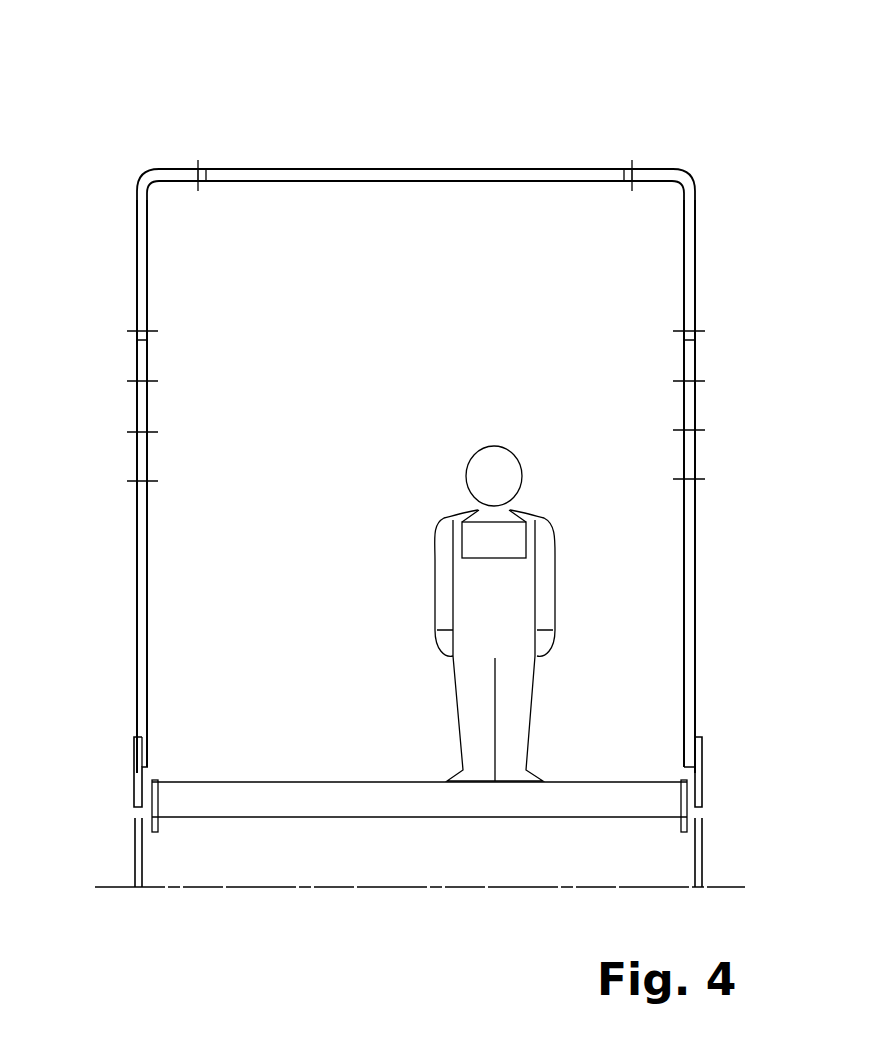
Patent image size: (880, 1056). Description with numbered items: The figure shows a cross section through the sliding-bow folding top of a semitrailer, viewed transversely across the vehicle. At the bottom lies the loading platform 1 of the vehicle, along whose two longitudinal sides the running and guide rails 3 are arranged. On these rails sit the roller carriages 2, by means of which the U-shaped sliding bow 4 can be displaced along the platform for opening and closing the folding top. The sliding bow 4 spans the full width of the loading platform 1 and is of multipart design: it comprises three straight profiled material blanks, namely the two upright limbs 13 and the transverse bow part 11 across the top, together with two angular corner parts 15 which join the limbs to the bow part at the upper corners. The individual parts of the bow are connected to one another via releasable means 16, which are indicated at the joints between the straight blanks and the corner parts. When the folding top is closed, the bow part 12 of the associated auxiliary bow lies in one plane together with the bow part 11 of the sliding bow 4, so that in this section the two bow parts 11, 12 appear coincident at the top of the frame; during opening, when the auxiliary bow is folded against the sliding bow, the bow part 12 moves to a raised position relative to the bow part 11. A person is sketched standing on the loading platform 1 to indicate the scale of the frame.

The loading platform 1 is at (398, 782).
The roller carriage 2 is at (140, 786).
The running and guide rail 3 is at (135, 868).
The sliding bow 4 is at (100, 462).
The bow part of sliding bow 11 is at (455, 170).
The bow part of auxiliary bow 12 is at (455, 170).
The limb 13 is at (140, 612).
The angular corner part 15 is at (674, 186).
The releasable means 16 is at (197, 170).